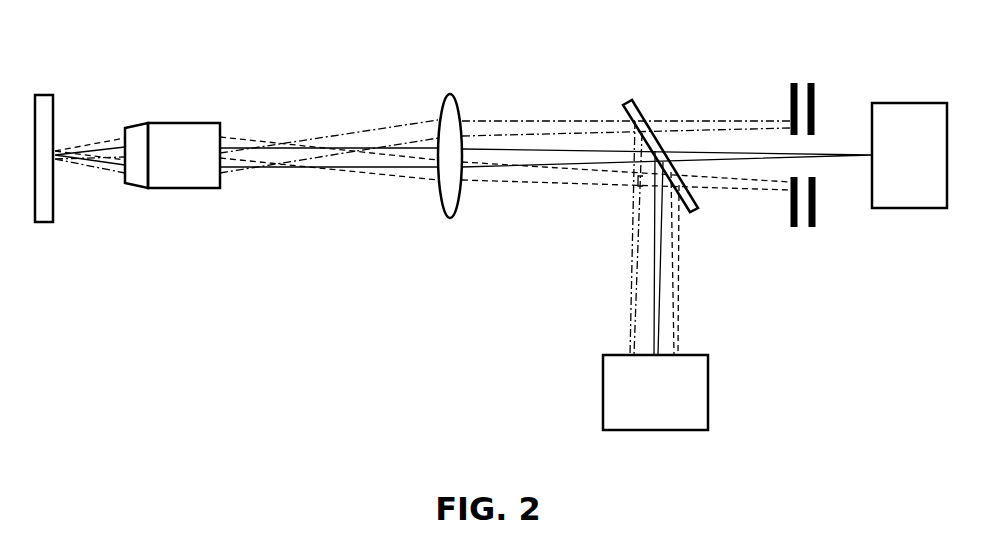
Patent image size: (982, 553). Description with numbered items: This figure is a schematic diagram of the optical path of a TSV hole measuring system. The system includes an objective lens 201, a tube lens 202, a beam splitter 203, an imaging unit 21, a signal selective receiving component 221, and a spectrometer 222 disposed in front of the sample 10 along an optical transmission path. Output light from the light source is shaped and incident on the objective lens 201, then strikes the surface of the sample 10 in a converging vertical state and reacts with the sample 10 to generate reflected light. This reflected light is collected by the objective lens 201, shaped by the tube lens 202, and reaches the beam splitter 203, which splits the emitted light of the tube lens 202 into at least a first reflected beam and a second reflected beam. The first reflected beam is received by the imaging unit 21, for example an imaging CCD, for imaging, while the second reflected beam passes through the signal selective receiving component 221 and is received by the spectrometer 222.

The sample 10 is at (41, 176).
The objective lens 201 is at (172, 172).
The tube lens 202 is at (444, 170).
The beam splitter 203 is at (655, 138).
The signal selective receiving component 221 is at (797, 134).
The spectrometer 222 is at (909, 155).
The imaging unit 21 is at (655, 392).